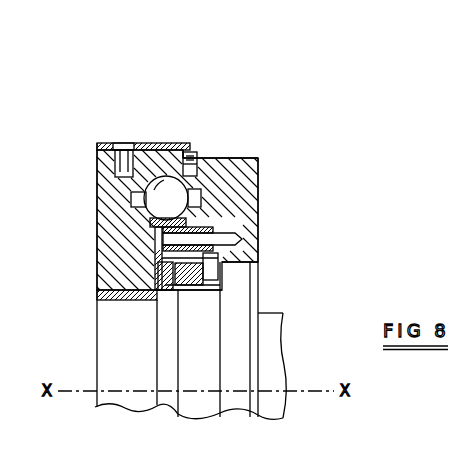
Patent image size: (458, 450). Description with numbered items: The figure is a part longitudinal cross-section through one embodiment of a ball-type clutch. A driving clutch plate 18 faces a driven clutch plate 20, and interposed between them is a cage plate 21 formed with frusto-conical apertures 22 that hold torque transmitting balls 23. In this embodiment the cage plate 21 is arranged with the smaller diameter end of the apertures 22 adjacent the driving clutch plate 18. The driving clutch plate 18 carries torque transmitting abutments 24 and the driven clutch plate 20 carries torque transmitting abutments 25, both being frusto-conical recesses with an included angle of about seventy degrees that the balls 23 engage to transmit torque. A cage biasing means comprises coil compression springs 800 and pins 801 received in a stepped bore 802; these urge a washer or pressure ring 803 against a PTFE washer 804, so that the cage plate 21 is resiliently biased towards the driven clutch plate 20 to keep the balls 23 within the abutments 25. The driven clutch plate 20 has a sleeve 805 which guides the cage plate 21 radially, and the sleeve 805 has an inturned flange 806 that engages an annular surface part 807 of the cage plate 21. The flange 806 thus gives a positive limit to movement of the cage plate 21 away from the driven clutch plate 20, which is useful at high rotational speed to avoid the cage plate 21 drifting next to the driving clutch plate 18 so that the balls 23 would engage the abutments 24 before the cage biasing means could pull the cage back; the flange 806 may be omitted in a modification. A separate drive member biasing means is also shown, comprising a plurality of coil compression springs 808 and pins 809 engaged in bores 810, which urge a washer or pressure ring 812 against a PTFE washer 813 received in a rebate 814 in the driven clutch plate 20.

The driving clutch plate 18 is at (255, 162).
The driven clutch plate 20 is at (97, 193).
The cage plate 21 is at (166, 143).
The apertures 22 is at (195, 157).
The balls 23 is at (152, 199).
The torque transmitting abutments 24 is at (212, 158).
The torque transmitting abutments 25 is at (140, 143).
The coil compression springs 800 is at (242, 238).
The pins 801 is at (205, 255).
The stepped bore 802 is at (200, 226).
The washer or pressure ring 803 is at (208, 213).
The PTFE washer 804 is at (162, 222).
The sleeve 805 is at (118, 143).
The inturned flange 806 is at (189, 158).
The annular surface part 807 is at (182, 155).
The coil compression springs 808 is at (253, 313).
The pins 809 is at (205, 270).
The bores 810 is at (192, 270).
The washer or pressure ring 812 is at (163, 290).
The PTFE washer 813 is at (146, 292).
The rebate 814 is at (97, 294).